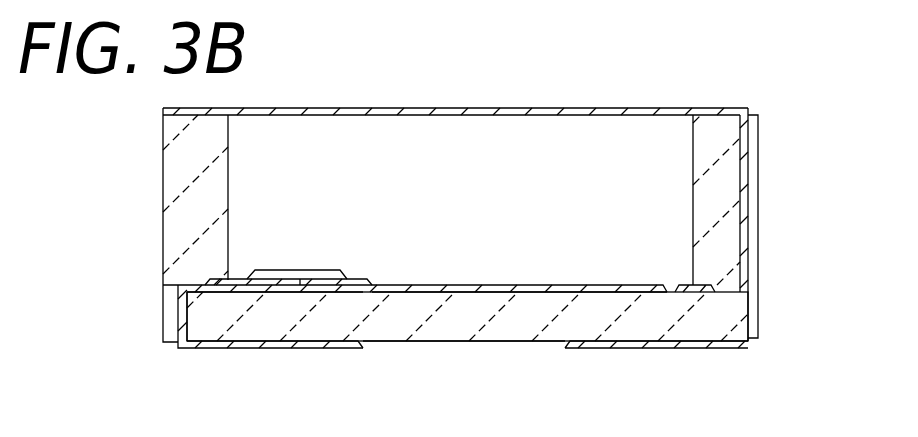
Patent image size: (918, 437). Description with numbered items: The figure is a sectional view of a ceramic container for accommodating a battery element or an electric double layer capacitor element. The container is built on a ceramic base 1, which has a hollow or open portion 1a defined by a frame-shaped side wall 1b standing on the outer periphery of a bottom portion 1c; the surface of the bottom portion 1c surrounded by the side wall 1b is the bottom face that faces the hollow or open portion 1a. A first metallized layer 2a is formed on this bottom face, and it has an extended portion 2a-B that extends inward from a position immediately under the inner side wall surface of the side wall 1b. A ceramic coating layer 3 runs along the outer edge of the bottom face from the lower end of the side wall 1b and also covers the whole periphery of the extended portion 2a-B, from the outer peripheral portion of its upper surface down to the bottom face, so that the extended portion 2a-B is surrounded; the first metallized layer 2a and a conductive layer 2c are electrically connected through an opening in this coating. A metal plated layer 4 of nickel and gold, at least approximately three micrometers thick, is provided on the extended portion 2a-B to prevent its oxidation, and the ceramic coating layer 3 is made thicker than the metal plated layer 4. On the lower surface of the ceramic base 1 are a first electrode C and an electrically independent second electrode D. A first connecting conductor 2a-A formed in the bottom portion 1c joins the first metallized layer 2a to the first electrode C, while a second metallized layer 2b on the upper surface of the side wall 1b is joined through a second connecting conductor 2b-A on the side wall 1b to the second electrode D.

The ceramic base 1 is at (693, 320).
The hollow or open portion 1a is at (539, 187).
The side wall 1b is at (718, 174).
The bottom portion 1c is at (495, 333).
The first metallized layer 2a is at (185, 285).
The first connecting conductor 2a-A is at (180, 313).
The extended portion 2a-B is at (300, 294).
The second metallized layer 2b is at (718, 108).
The second connecting conductor 2b-A is at (745, 235).
The conductive layer 2c is at (471, 285).
The ceramic coating layer 3 is at (222, 283).
The metal plated layer 4 is at (288, 283).
The first electrode C is at (265, 348).
The second electrode D is at (651, 348).